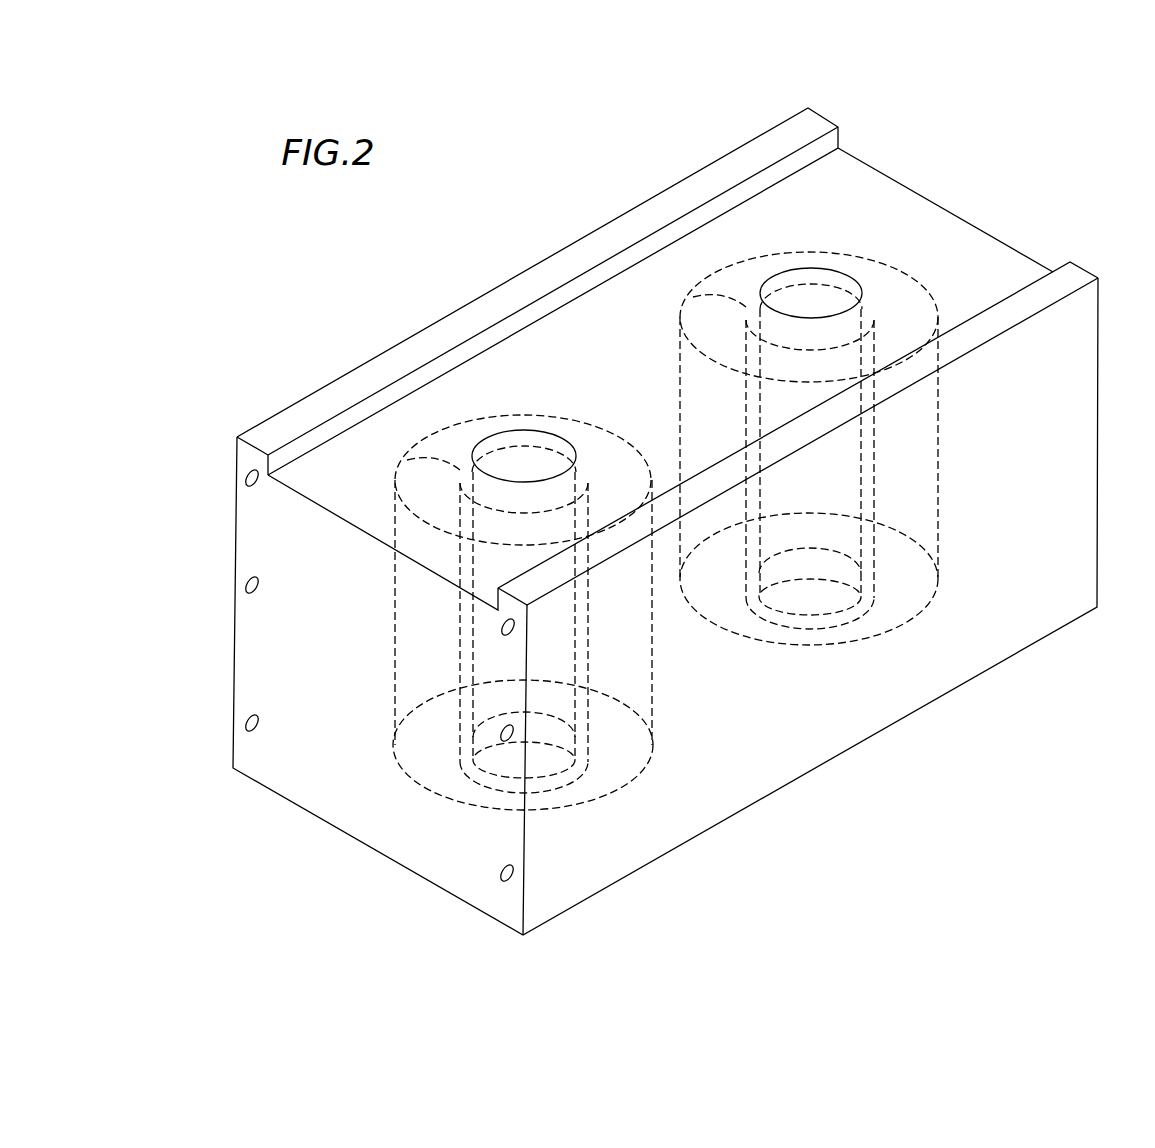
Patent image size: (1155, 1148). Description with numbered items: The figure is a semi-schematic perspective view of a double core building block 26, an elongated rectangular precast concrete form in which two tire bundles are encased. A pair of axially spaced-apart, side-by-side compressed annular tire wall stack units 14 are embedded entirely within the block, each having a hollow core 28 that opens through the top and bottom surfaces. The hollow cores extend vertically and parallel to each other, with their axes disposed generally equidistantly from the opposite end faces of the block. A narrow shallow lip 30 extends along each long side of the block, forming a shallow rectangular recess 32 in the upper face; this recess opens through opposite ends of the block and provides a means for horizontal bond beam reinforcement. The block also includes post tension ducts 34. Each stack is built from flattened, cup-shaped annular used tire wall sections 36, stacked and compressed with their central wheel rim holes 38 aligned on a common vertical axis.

The tire stack unit 14 is at (937, 497).
The double core building block 26 is at (380, 295).
The hollow core 28 is at (523, 432).
The lip 30 is at (690, 186).
The recess 32 is at (888, 200).
The post tension ducts 34 is at (246, 484).
The tire wall section 36 is at (517, 415).
The central wheel rim hole 38 is at (407, 461).